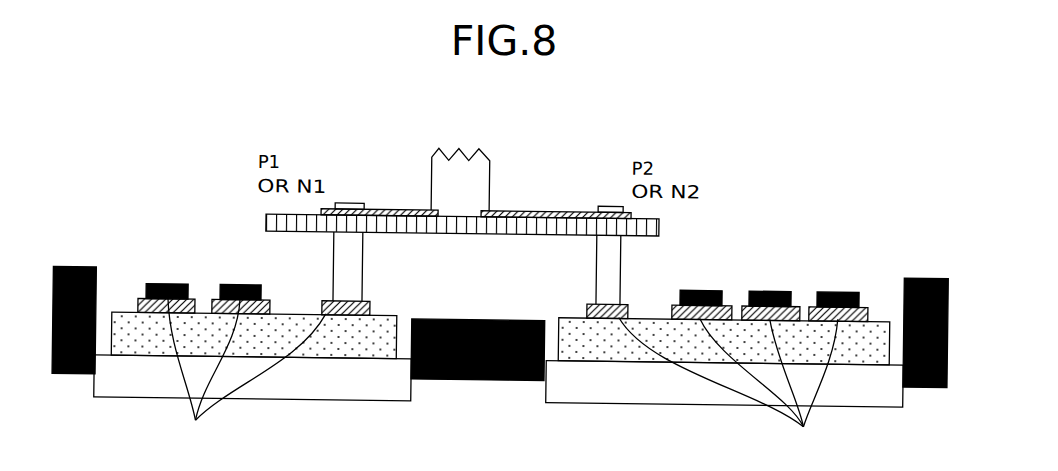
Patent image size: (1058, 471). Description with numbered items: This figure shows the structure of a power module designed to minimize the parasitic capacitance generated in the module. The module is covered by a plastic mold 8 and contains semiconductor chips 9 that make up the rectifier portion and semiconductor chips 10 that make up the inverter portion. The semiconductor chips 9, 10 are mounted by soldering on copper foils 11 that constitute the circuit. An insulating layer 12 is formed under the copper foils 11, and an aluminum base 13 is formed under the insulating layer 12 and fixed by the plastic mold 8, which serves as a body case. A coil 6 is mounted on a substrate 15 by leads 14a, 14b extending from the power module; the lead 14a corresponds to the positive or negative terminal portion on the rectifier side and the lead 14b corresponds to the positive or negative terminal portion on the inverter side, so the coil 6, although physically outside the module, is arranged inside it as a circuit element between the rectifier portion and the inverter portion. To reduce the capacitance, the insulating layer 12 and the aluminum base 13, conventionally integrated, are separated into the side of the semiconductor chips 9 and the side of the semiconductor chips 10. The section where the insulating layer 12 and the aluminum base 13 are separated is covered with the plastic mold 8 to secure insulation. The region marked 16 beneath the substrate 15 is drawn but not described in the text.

The coil 6 is at (471, 151).
The plastic mold 8 is at (75, 271).
The semiconductor chips 9 is at (233, 288).
The semiconductor chips 10 is at (833, 288).
The copper foils 11 is at (502, 378).
The insulating layer 12 is at (628, 350).
The aluminum base 13 is at (288, 383).
The lead 14a is at (341, 205).
The lead 14b is at (612, 205).
The substrate 15 is at (537, 222).
The insulating film 16 is at (495, 235).